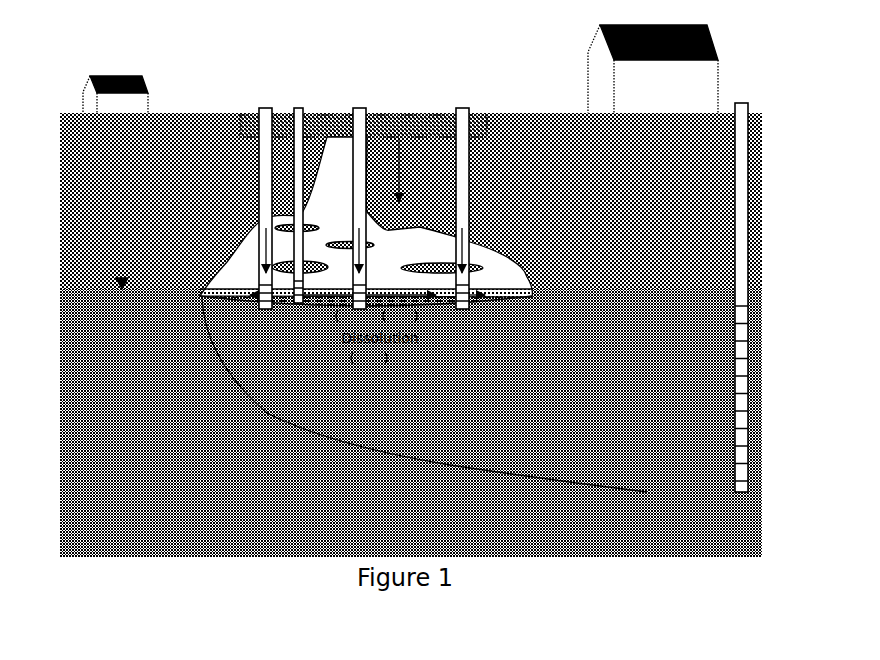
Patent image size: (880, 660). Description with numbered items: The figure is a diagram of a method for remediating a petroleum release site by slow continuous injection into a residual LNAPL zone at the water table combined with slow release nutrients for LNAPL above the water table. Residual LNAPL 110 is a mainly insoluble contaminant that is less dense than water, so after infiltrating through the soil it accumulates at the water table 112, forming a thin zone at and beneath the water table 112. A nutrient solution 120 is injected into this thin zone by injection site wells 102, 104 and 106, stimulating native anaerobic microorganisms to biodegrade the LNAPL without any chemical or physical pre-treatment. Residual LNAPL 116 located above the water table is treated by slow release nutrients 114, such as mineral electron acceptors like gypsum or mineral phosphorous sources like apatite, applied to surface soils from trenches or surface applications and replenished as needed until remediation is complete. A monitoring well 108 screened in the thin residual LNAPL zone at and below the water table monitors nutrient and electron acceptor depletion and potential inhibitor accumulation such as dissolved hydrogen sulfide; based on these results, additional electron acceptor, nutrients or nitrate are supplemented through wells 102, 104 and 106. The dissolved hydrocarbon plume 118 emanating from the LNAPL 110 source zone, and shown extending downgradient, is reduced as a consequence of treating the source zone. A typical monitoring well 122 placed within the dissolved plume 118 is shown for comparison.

The injection site well 102 is at (265, 110).
The injection site well 104 is at (360, 109).
The injection site well 106 is at (465, 109).
The monitoring well 108 is at (300, 110).
The residual LNAPL 110 is at (205, 298).
The water table 112 is at (85, 288).
The slow release nutrients 114 is at (257, 110).
The residual LNAPL zone above the water table 116 is at (477, 260).
The dissolved hydrocarbon plume 118 is at (450, 467).
The nutrient solution 120 is at (262, 220).
The typical monitoring well 122 is at (743, 101).